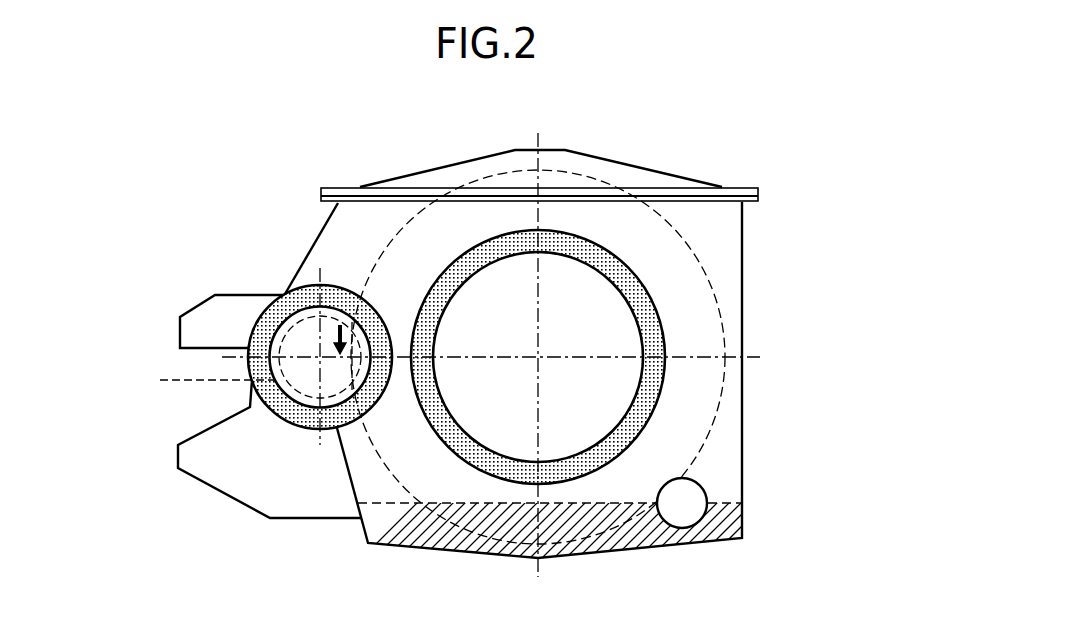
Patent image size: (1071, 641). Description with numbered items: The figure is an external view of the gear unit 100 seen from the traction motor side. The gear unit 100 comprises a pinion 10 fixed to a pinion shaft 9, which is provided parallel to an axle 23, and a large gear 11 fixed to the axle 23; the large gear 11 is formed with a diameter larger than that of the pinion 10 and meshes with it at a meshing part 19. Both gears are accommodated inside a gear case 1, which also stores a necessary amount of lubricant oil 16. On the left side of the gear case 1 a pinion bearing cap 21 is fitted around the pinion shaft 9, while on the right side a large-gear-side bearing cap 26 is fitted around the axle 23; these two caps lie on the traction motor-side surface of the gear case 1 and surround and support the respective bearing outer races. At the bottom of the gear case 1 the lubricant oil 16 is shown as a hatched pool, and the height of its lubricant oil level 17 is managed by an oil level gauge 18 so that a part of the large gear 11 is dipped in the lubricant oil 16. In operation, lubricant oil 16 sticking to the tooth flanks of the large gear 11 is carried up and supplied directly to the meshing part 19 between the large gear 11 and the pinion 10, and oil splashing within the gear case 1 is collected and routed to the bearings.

The gear unit 100 is at (640, 143).
The gear case 1 is at (725, 230).
The axle 23 is at (607, 316).
The large-gear-side bearing cap 26 is at (648, 344).
The large gear 11 is at (722, 402).
The oil level gauge 18 is at (703, 485).
The lubricant oil 16 is at (393, 533).
The lubricant oil level 17 is at (470, 535).
The pinion bearing cap 21 is at (278, 302).
The pinion shaft 9 is at (298, 340).
The pinion 10 is at (222, 381).
The meshing part 19 is at (340, 377).